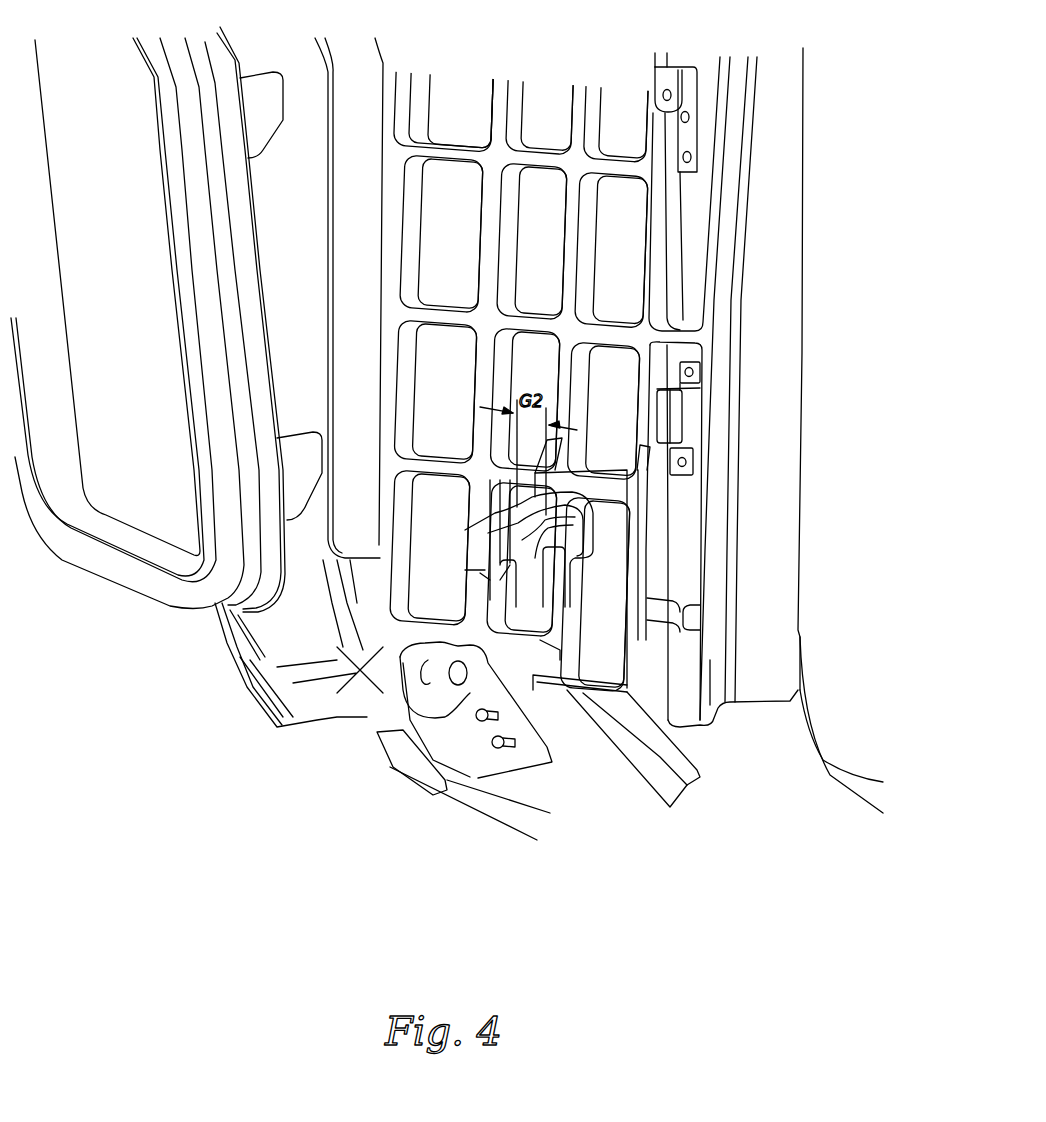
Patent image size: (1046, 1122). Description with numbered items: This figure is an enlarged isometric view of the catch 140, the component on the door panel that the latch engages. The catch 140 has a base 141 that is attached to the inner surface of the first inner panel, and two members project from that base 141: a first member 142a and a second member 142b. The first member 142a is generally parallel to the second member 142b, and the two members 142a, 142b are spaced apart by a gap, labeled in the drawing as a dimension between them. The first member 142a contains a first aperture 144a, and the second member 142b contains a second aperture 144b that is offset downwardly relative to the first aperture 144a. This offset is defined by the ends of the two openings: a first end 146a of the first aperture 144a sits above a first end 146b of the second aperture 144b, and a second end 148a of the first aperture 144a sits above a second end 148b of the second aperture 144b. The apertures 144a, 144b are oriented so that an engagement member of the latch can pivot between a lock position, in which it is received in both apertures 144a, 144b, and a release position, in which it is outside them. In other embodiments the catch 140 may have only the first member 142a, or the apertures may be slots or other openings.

The catch 140 is at (607, 500).
The base 141 is at (562, 503).
The first member 142a is at (552, 653).
The second member 142b is at (480, 573).
The first aperture 144a is at (557, 583).
The second aperture 144b is at (502, 602).
The first end of the first aperture 146a is at (565, 547).
The first end of the second aperture 146b is at (510, 565).
The second end of the first aperture 148a is at (557, 613).
The second end of the second aperture 148b is at (555, 660).